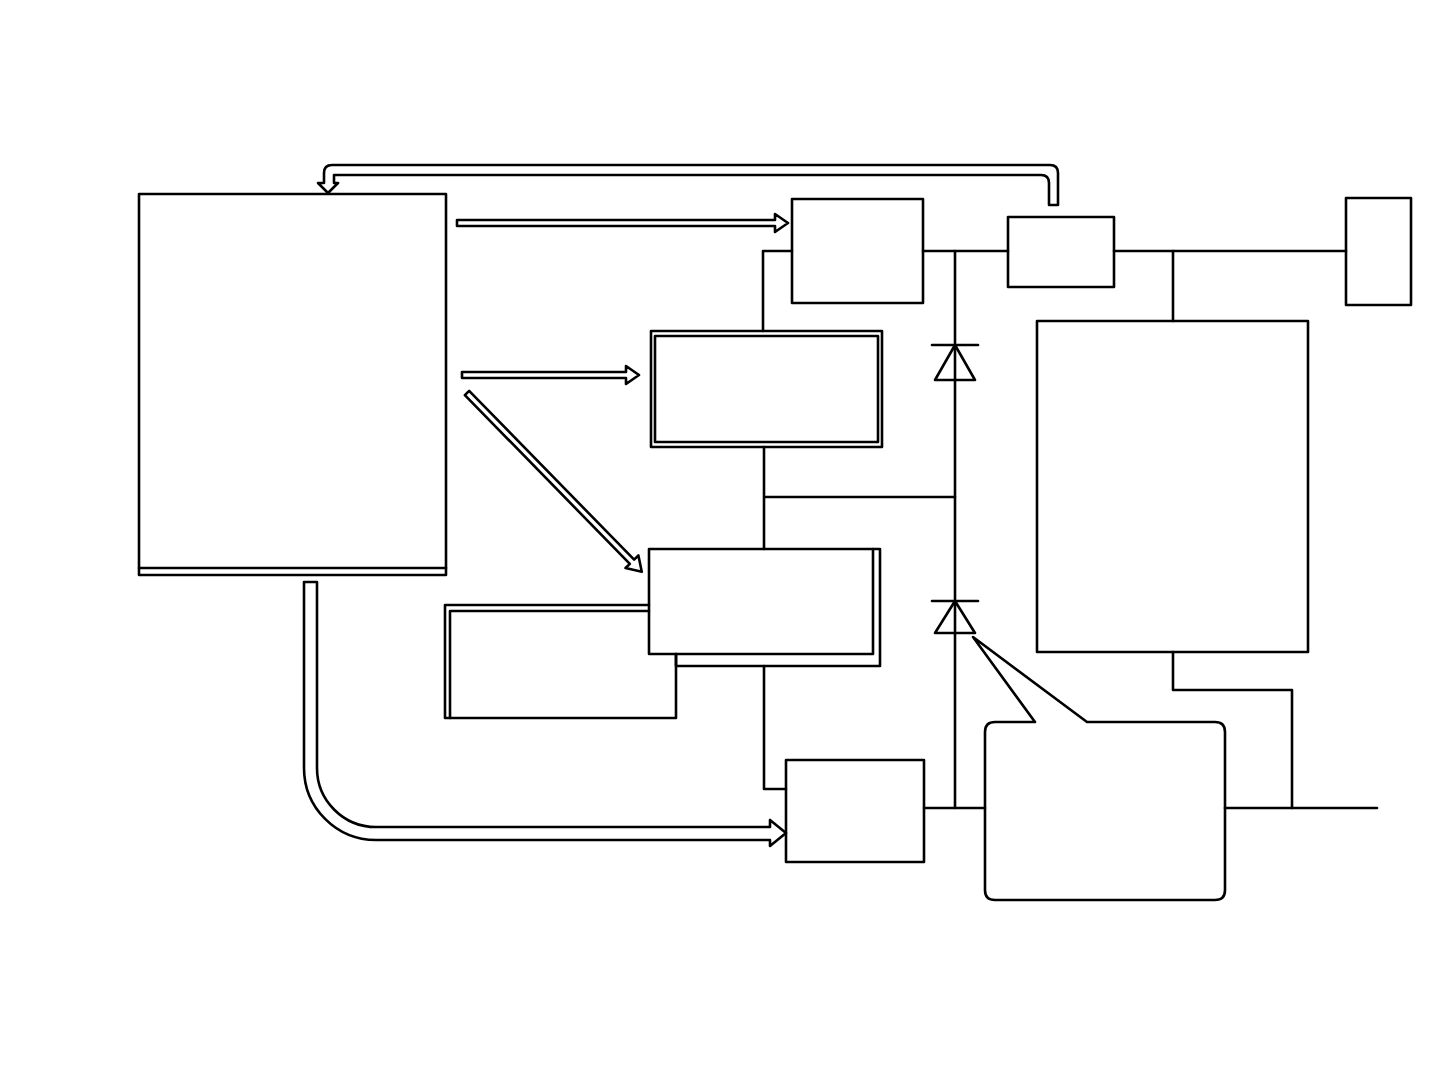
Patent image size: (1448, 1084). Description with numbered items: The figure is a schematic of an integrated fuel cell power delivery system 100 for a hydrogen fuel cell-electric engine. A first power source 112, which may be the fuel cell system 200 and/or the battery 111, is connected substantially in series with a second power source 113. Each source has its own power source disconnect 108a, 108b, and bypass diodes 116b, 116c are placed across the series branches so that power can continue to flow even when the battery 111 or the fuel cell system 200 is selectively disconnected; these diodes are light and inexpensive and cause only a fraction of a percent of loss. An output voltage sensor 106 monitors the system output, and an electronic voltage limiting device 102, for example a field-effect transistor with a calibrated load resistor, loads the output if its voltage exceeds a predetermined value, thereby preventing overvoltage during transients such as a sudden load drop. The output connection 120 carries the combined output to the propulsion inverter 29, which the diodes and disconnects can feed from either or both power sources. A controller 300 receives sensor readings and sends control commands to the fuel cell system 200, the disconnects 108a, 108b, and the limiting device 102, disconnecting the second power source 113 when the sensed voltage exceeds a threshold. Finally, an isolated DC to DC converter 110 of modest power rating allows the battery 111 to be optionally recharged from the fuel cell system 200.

The integrated fuel cell power delivery system 100 is at (156, 74).
The controller 300 is at (207, 552).
The power source disconnect 108a is at (887, 199).
The power source disconnect 108b is at (870, 760).
The output voltage sensor 106 is at (1090, 217).
The output line 120 is at (1240, 251).
The electronic voltage limiting device 102 is at (1243, 321).
The propulsion inverter 29 is at (1378, 198).
The bypass diode 116b is at (957, 350).
The bypass diode 116c is at (958, 601).
The first power source 112 is at (648, 331).
The second power source 113 is at (713, 668).
The fuel cell system 200 is at (749, 512).
The DC to DC converter 110 is at (551, 694).
The battery 111 is at (469, 703).